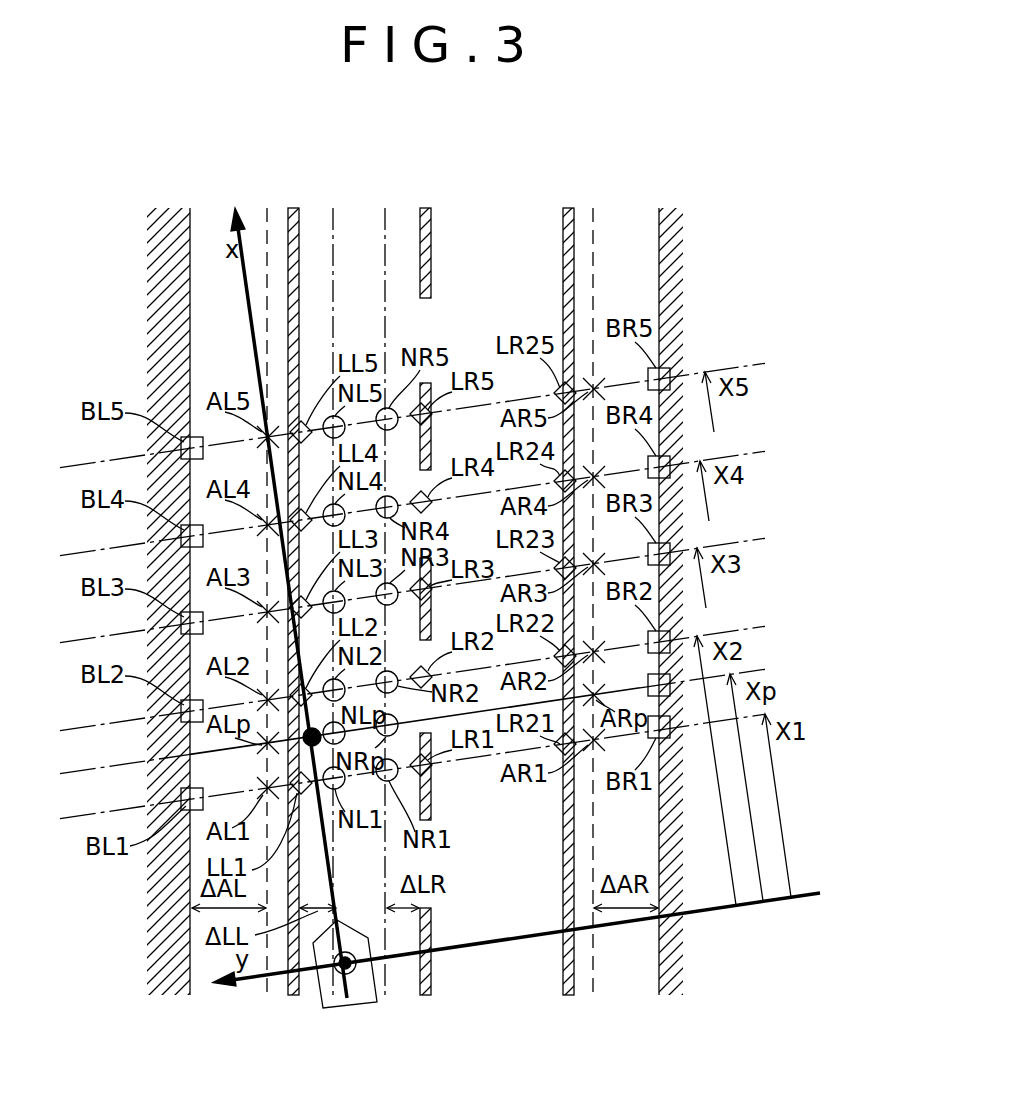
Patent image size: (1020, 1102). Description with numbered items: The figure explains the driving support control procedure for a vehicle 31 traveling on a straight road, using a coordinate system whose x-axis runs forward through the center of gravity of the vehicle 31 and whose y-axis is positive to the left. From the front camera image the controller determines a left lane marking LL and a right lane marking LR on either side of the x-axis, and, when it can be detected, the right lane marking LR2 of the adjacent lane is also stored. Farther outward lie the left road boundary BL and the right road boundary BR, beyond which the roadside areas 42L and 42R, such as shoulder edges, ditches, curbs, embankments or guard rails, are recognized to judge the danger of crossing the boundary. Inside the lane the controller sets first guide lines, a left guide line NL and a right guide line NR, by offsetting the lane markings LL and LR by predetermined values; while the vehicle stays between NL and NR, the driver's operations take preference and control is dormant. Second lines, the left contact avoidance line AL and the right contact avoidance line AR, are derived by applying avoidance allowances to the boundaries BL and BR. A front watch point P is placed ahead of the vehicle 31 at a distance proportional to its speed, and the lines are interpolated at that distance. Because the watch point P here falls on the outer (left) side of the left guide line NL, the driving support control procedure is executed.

The left roadside area 42L is at (168, 238).
The right roadside area 42R is at (675, 235).
The vehicle 31 is at (362, 1005).
The left road boundary BL is at (190, 208).
The left contact avoidance line AL is at (267, 208).
The left lane marking LL is at (298, 208).
The left guide line NL is at (333, 208).
The right guide line NR is at (385, 208).
The right lane marking LR is at (430, 208).
The right lane marking of the adjacent lane LR2 is at (570, 208).
The right contact avoidance line AR is at (593, 208).
The right road boundary BR is at (659, 208).
The front watch point P is at (305, 745).